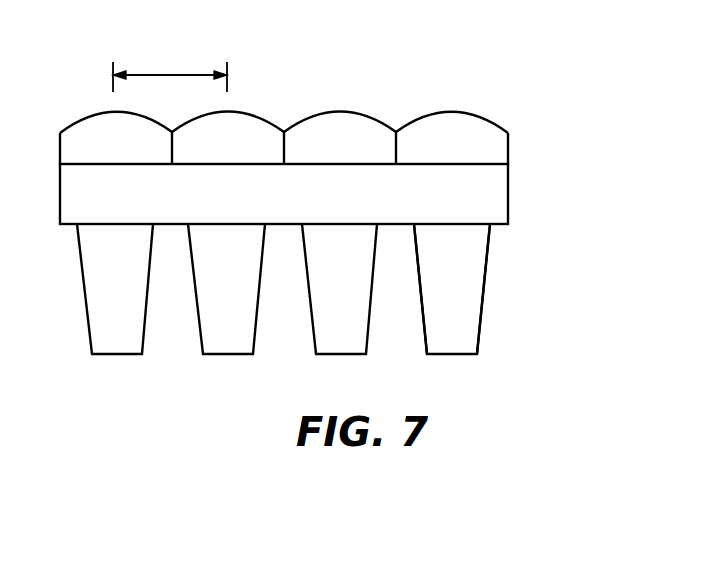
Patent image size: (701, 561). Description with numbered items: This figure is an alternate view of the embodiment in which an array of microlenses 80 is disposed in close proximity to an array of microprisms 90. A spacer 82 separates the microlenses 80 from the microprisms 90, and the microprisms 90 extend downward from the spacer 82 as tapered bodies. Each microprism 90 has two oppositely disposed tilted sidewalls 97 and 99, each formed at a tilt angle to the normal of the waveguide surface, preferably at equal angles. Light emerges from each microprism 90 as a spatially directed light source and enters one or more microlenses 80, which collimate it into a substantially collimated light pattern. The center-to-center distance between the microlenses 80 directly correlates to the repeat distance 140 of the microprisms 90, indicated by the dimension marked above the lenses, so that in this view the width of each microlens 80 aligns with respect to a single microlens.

The microlenses 80 is at (509, 128).
The spacer 82 is at (509, 197).
The microprisms 90 is at (483, 280).
The tilted sidewall 97 is at (423, 328).
The tilted sidewall 99 is at (476, 322).
The repeat distance 140 is at (178, 72).